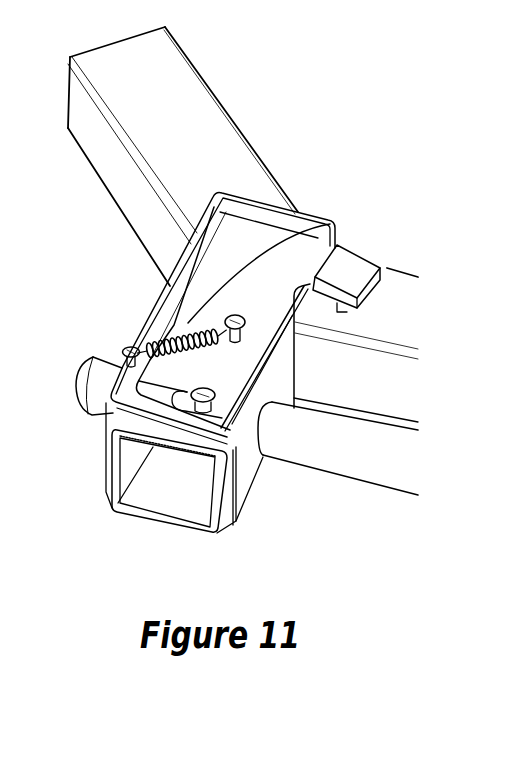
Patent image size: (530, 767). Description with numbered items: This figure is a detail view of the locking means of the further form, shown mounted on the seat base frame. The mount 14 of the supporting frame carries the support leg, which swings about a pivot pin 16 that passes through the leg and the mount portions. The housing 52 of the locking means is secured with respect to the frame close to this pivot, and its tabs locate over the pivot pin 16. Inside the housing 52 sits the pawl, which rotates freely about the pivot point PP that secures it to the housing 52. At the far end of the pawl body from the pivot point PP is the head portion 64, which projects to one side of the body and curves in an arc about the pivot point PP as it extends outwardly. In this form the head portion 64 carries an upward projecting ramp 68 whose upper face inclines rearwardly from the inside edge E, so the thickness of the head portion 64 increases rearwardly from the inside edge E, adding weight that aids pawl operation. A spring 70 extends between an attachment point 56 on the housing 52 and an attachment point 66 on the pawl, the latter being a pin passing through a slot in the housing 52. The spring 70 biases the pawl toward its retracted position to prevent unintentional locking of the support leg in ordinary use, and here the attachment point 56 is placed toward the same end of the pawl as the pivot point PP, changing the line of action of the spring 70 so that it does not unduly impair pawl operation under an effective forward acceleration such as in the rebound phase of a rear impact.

The mount 14 is at (252, 107).
The pivot pin 16 is at (355, 452).
The housing 52 is at (133, 418).
The attachment point 56 is at (126, 346).
The head portion 64 is at (282, 262).
The attachment point 66 is at (242, 313).
The ramp 68 is at (352, 263).
The spring 70 is at (176, 328).
The inside edge E is at (333, 307).
The pivot point PP is at (172, 400).